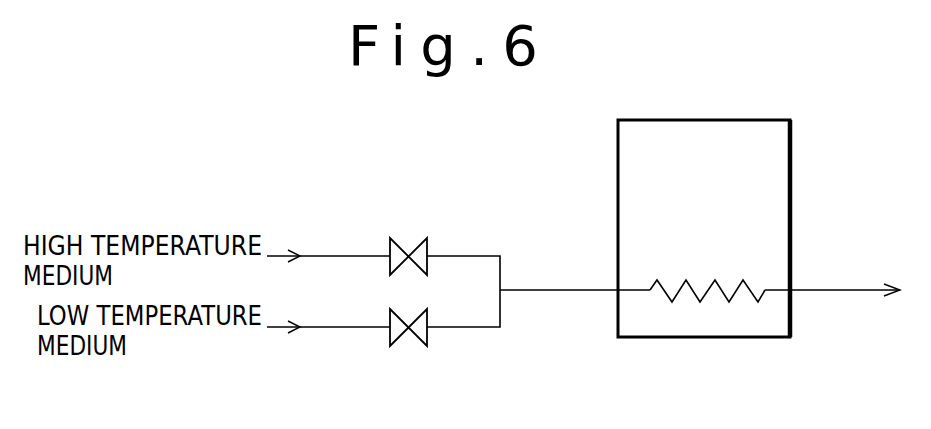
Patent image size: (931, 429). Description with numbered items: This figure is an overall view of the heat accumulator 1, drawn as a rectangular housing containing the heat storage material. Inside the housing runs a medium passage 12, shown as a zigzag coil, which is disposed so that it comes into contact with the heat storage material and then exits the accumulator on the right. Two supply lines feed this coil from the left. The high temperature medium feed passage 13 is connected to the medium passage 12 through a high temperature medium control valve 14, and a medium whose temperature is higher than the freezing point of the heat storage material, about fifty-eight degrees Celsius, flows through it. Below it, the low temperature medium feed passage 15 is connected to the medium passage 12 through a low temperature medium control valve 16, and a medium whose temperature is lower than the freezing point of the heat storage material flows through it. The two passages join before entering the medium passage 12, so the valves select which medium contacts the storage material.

The heat accumulator 1 is at (790, 138).
The medium passage 12 is at (661, 295).
The high temperature medium feed passage 13 is at (345, 255).
The high temperature medium control valve 14 is at (420, 240).
The low temperature medium feed passage 15 is at (361, 328).
The low temperature medium control valve 16 is at (415, 347).